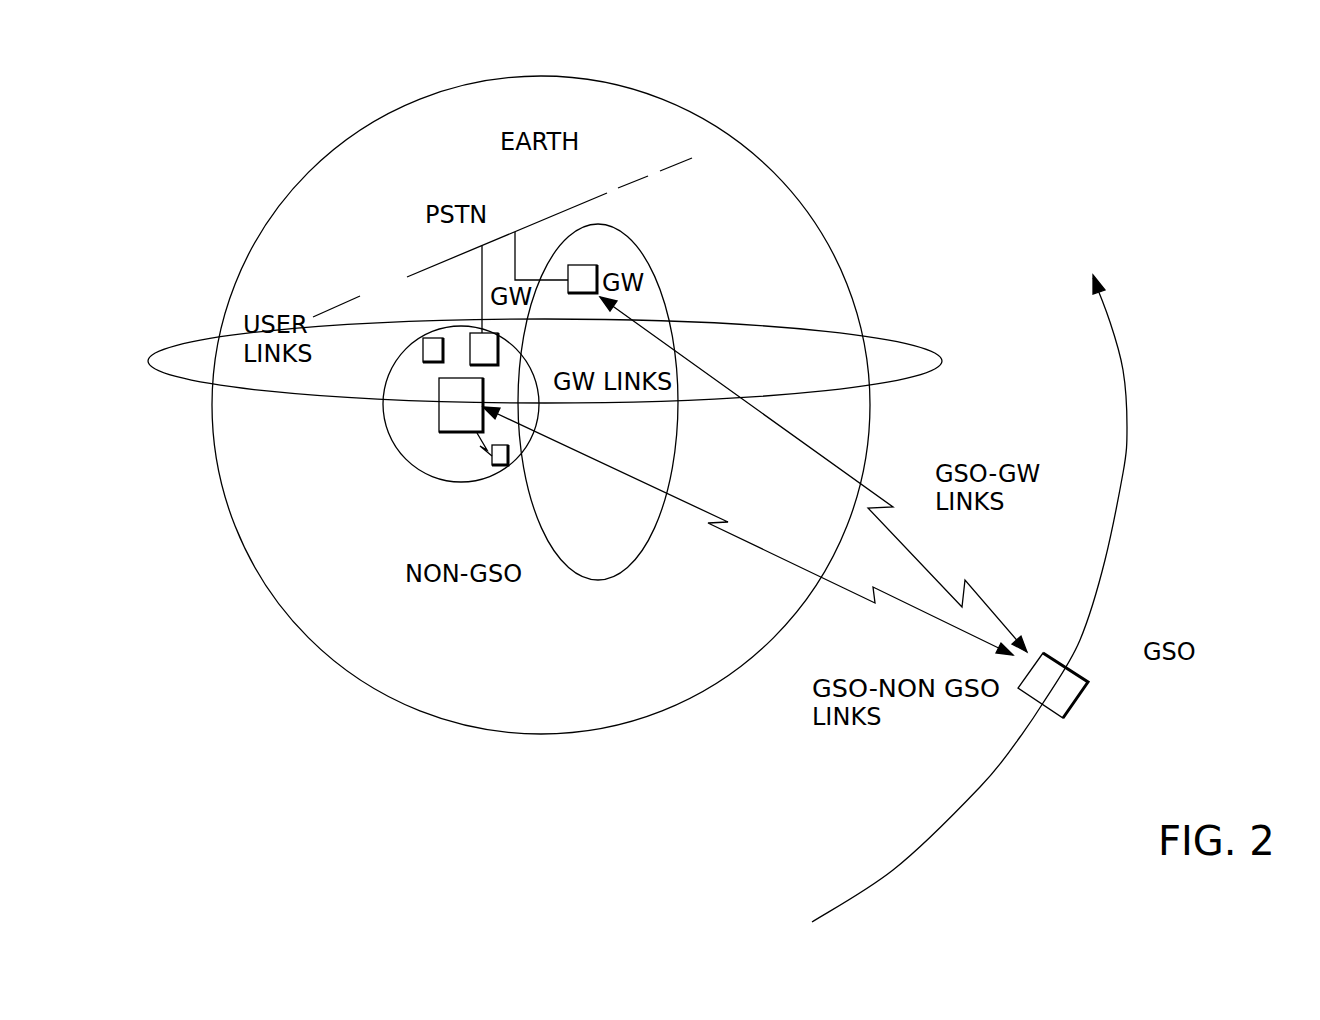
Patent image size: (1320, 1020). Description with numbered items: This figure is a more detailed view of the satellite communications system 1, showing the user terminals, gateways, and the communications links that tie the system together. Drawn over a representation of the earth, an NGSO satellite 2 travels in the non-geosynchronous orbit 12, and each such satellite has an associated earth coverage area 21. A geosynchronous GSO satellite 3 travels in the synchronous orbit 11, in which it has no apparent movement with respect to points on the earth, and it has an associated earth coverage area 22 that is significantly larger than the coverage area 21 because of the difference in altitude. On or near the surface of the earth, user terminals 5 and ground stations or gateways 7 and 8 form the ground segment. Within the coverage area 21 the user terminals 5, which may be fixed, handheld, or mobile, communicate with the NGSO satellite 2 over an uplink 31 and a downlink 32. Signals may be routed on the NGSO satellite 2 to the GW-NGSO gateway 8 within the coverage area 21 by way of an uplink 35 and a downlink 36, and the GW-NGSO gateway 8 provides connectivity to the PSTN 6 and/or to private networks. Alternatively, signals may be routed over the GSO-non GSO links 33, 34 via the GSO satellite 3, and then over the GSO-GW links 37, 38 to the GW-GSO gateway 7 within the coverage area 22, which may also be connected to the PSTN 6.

The satellite communications system 1 is at (225, 183).
The NGSO satellite 2 is at (462, 432).
The GSO satellite 3 is at (1088, 668).
The user terminals 5 is at (433, 338).
The public switched network (PSTN) 6 is at (472, 250).
The GW-GSO gateway 7 is at (585, 265).
The GW-NGSO gateway 8 is at (498, 347).
The synchronous orbit 11 is at (1124, 376).
The non-geosynchronous orbit 12 is at (923, 345).
The earth coverage area of NGSO satellite 21 is at (403, 461).
The earth coverage area of GSO satellite 22 is at (660, 282).
The uplink 31 is at (435, 365).
The downlink 32 is at (279, 382).
The GSO-non GSO link 33 is at (870, 601).
The GSO-non GSO link 34 is at (843, 660).
The uplink 35 is at (487, 380).
The downlink 36 is at (584, 355).
The GSO-GW link 37 is at (880, 498).
The GSO-GW link 38 is at (966, 444).